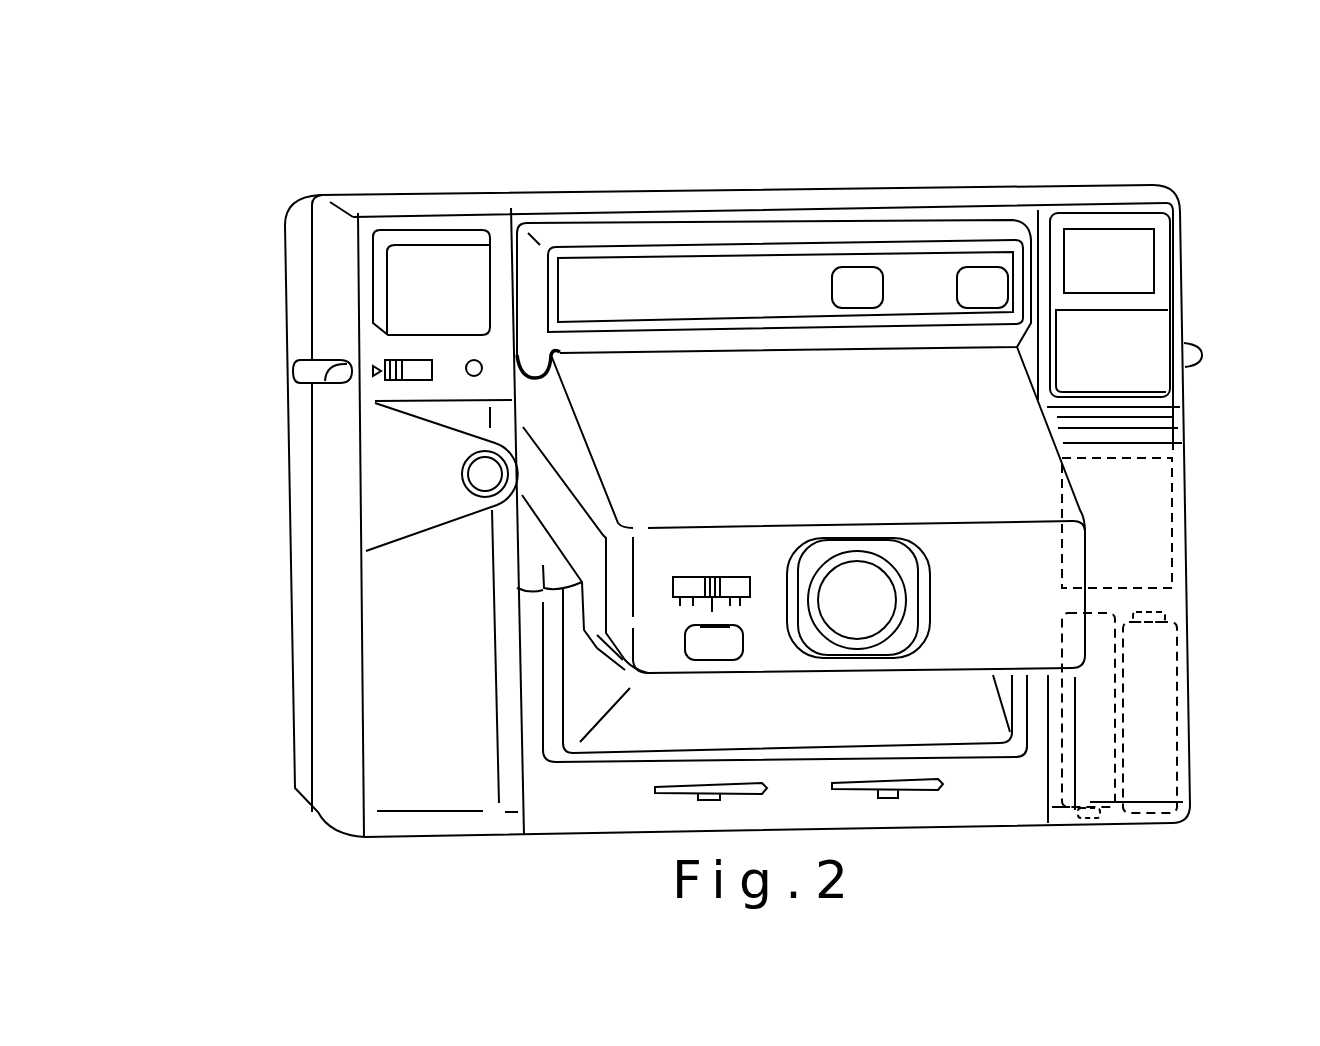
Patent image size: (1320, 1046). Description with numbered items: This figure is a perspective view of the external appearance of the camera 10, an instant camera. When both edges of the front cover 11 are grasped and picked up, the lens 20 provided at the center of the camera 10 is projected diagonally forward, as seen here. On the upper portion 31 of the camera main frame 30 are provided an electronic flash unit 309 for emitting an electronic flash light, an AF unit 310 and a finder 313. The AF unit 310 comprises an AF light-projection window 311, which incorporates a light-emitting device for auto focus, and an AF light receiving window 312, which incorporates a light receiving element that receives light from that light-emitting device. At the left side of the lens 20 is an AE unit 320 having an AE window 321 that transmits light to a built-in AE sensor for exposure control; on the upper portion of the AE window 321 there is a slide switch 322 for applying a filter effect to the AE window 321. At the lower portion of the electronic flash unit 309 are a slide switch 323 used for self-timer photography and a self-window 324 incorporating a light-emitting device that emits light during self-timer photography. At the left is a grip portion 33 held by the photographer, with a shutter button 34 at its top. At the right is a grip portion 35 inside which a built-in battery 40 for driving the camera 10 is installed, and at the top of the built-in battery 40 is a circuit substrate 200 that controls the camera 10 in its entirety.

The camera 10 is at (768, 152).
The front cover 11 is at (1030, 491).
The lens 20 is at (873, 597).
The camera main frame 30 is at (1087, 167).
The upper portion 31 is at (642, 201).
The grip portion 33 is at (400, 618).
The shutter button 34 is at (478, 473).
The grip portion 35 is at (1163, 547).
The built-in battery 40 is at (1148, 702).
The circuit substrate 200 is at (1160, 508).
The electronic flash unit 309 is at (400, 267).
The AF unit 310 is at (914, 104).
The AF light-projection window 311 is at (855, 275).
The AF light receiving window 312 is at (985, 275).
The finder 313 is at (1133, 268).
The AE unit 320 is at (683, 667).
The AE window 321 is at (720, 653).
The slide switch 322 is at (722, 577).
The slide switch 323 is at (383, 363).
The self-window 324 is at (478, 358).